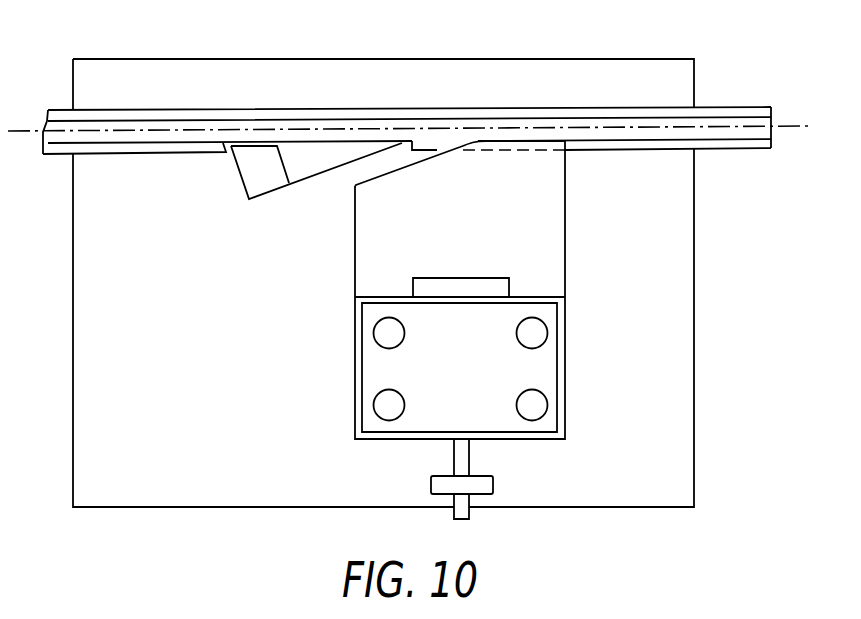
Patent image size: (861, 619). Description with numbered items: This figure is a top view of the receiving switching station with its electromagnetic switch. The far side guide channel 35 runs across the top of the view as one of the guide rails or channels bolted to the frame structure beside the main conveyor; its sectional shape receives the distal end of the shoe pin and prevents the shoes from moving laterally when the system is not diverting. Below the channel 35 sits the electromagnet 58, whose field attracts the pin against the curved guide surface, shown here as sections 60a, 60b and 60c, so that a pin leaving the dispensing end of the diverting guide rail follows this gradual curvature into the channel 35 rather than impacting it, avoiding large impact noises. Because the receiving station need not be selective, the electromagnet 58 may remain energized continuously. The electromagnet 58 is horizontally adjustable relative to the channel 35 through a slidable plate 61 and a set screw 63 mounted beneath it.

The guide channel 35 is at (147, 115).
The electromagnet 58 is at (566, 265).
The guide surface section 60a is at (540, 141).
The guide surface section 60b is at (478, 142).
The guide surface section 60c is at (385, 173).
The slidable plate 61 is at (566, 370).
The set screw 63 is at (493, 486).